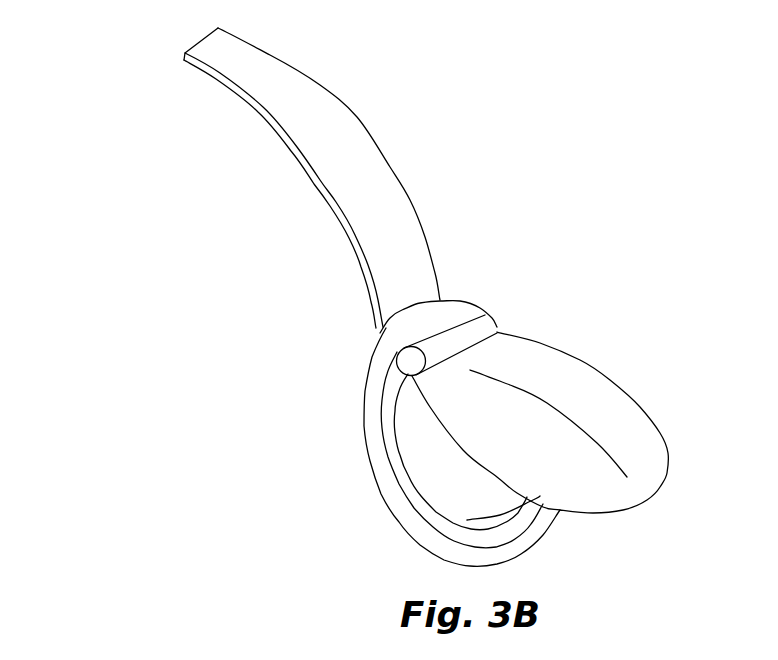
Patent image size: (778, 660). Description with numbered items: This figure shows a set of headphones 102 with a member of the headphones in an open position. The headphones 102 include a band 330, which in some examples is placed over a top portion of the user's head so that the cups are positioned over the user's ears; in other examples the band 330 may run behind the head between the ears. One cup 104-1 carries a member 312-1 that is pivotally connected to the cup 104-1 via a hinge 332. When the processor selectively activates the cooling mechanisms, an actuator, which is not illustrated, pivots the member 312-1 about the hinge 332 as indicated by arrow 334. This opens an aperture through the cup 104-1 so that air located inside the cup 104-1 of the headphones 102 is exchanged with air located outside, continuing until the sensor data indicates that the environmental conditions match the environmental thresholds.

The headphones 102 is at (115, 113).
The band 330 is at (326, 183).
The hinge 332 is at (400, 357).
The cup 104-1 is at (368, 403).
The member 312-1 is at (620, 408).
The arrow 334 is at (696, 480).